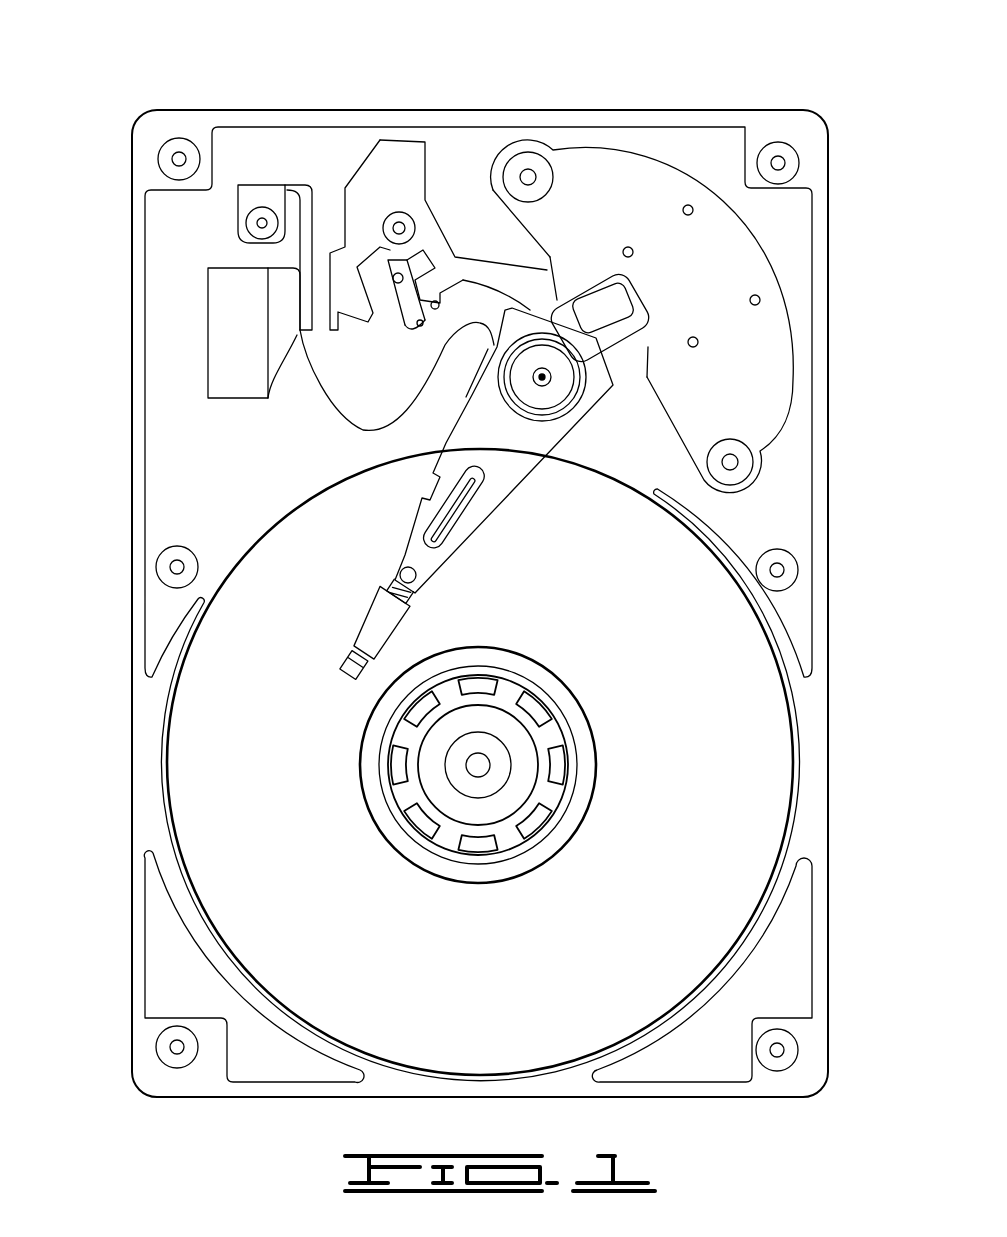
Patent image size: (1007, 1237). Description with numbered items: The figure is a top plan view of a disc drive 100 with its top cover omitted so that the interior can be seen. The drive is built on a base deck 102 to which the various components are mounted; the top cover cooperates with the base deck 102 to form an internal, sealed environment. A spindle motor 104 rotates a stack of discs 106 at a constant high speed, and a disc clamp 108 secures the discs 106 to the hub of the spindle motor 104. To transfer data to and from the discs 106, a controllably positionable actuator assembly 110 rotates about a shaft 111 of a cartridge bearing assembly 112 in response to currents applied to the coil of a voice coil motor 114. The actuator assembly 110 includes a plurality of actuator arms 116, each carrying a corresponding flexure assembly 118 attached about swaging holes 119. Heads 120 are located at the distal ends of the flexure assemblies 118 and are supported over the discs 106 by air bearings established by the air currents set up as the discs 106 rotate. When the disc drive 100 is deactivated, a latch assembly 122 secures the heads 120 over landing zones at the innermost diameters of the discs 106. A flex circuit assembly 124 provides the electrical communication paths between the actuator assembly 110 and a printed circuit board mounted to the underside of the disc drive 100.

The disc drive 100 is at (247, 90).
The base deck 102 is at (222, 470).
The spindle motor 104 is at (489, 792).
The discs 106 is at (722, 852).
The disc clamp 108 is at (377, 813).
The actuator assembly 110 is at (518, 448).
The shaft 111 is at (553, 378).
The cartridge bearing assembly 112 is at (552, 392).
The voice coil motor 114 is at (582, 215).
The actuator arms 116 is at (413, 555).
The flexure assemblies 118 is at (367, 633).
The swaging holes 119 is at (418, 582).
The heads 120 is at (338, 668).
The latch assembly 122 is at (400, 160).
The flex circuit assembly 124 is at (340, 426).